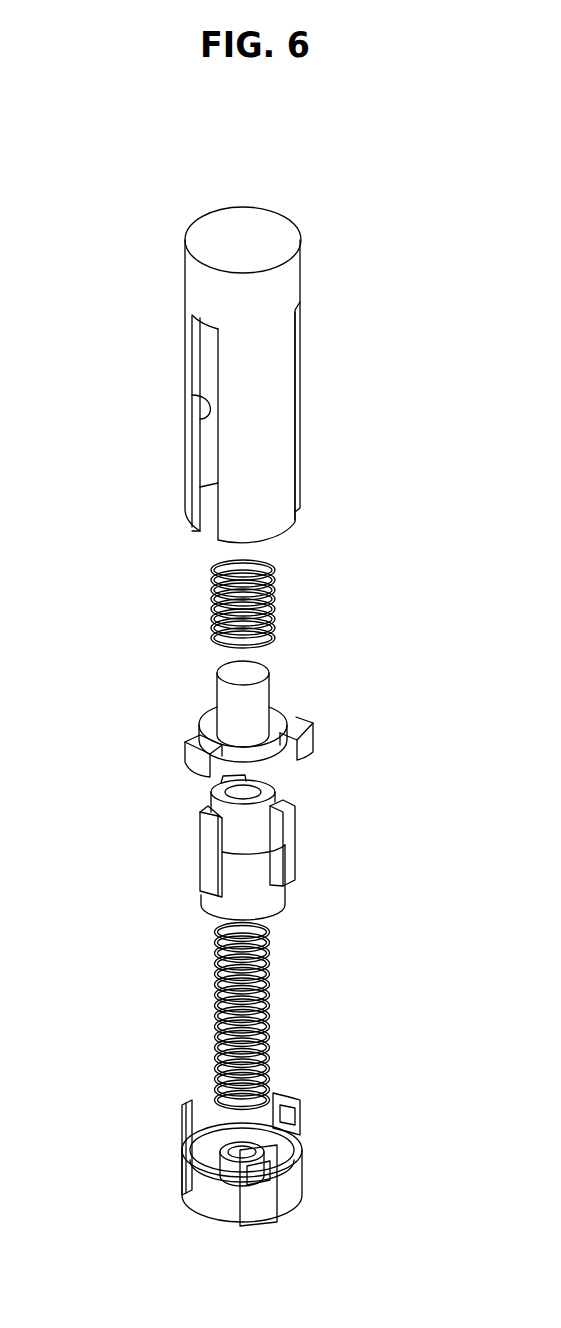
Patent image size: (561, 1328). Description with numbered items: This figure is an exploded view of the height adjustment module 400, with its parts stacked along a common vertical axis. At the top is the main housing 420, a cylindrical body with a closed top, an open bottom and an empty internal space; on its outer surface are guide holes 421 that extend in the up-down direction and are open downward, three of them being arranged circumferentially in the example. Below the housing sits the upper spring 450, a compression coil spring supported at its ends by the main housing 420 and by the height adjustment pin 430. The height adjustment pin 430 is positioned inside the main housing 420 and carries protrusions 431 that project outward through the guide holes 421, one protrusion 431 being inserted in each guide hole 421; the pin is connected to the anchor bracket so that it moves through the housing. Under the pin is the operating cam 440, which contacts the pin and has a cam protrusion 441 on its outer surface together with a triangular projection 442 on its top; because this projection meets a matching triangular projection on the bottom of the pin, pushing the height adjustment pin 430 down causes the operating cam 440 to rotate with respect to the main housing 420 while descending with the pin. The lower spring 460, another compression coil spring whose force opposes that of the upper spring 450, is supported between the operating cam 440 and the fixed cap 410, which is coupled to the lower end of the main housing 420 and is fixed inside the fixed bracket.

The height adjustment module 400 is at (311, 372).
The fixed cap 410 is at (290, 1190).
The main housing 420 is at (240, 232).
The guide hole 421 is at (192, 396).
The height adjustment pin 430 is at (262, 695).
The protrusion 431 is at (196, 743).
The operating cam 440 is at (260, 872).
The cam protrusion 441 is at (209, 849).
The triangular projection 442 is at (213, 793).
The upper spring 450 is at (211, 599).
The lower spring 460 is at (268, 1027).